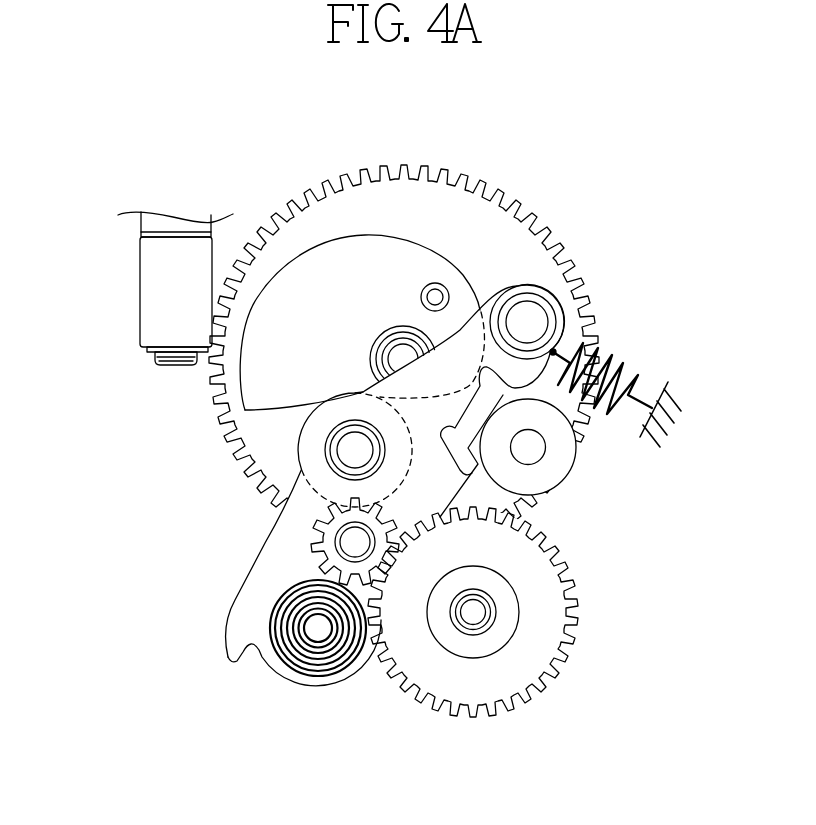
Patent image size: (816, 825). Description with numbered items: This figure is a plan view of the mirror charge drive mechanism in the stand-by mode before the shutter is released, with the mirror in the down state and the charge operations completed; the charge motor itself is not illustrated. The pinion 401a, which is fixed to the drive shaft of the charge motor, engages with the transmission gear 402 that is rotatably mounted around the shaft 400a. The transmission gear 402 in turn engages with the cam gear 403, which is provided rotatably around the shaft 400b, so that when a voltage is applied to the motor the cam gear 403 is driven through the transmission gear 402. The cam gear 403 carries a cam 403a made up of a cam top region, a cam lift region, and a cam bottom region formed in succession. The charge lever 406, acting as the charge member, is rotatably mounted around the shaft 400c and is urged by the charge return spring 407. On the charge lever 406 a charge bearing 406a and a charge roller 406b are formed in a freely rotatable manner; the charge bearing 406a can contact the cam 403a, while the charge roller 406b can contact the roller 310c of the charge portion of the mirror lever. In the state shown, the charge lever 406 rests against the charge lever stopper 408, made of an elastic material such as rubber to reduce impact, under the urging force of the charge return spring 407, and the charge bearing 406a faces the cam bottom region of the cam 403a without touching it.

The cam gear 403 is at (512, 230).
The cam 403a is at (308, 273).
The shaft 400b is at (403, 360).
The charge lever 406 is at (233, 652).
The charge bearing 406a is at (307, 428).
The charge roller 406b is at (545, 298).
The charge return spring 407 is at (640, 362).
The charge lever stopper 408 is at (558, 452).
The pinion 401a is at (310, 538).
The transmission gear 402 is at (563, 623).
The shaft 400a is at (475, 613).
The shaft 400c is at (320, 628).
The roller 310c is at (147, 298).